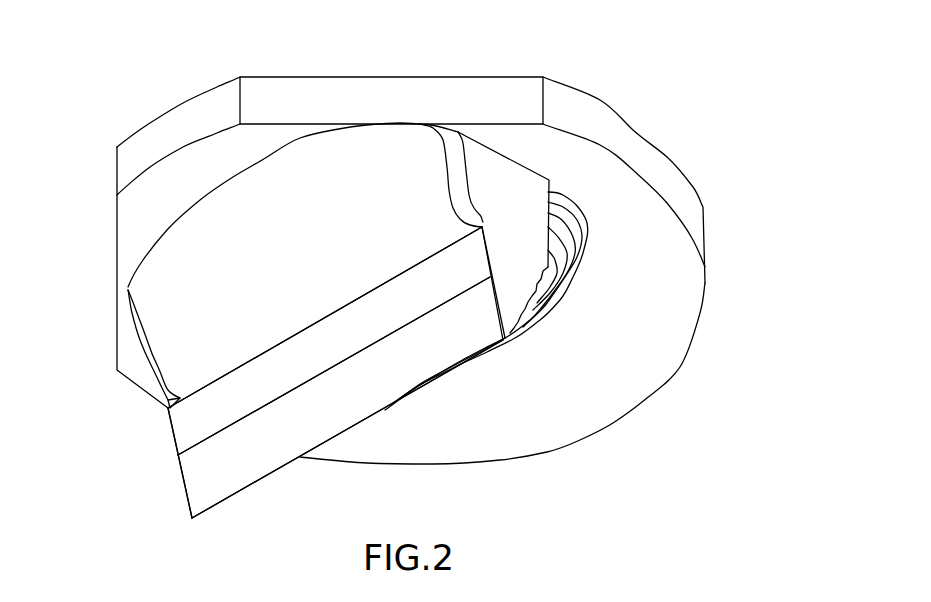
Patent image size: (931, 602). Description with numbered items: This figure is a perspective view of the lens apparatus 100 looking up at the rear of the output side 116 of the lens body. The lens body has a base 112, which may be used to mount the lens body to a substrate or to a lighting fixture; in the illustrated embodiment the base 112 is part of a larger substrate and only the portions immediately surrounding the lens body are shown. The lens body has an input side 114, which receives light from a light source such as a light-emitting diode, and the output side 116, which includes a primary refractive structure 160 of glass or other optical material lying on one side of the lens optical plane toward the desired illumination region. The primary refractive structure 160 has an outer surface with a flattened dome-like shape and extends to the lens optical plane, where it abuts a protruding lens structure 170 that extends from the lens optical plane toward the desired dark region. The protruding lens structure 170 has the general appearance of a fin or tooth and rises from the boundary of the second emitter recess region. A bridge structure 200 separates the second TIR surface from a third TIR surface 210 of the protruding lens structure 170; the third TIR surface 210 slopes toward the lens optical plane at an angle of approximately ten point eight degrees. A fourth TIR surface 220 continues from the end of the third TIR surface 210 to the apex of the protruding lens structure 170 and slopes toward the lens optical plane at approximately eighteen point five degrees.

The lens apparatus 100 is at (137, 94).
The base 112 is at (142, 143).
The input side 114 is at (521, 71).
The output side 116 is at (466, 474).
The primary refractive structure 160 is at (535, 339).
The protruding lens structure 170 is at (313, 474).
The bridge structure 200 is at (163, 275).
The third TIR surface 210 is at (197, 418).
The fourth TIR surface 220 is at (200, 470).